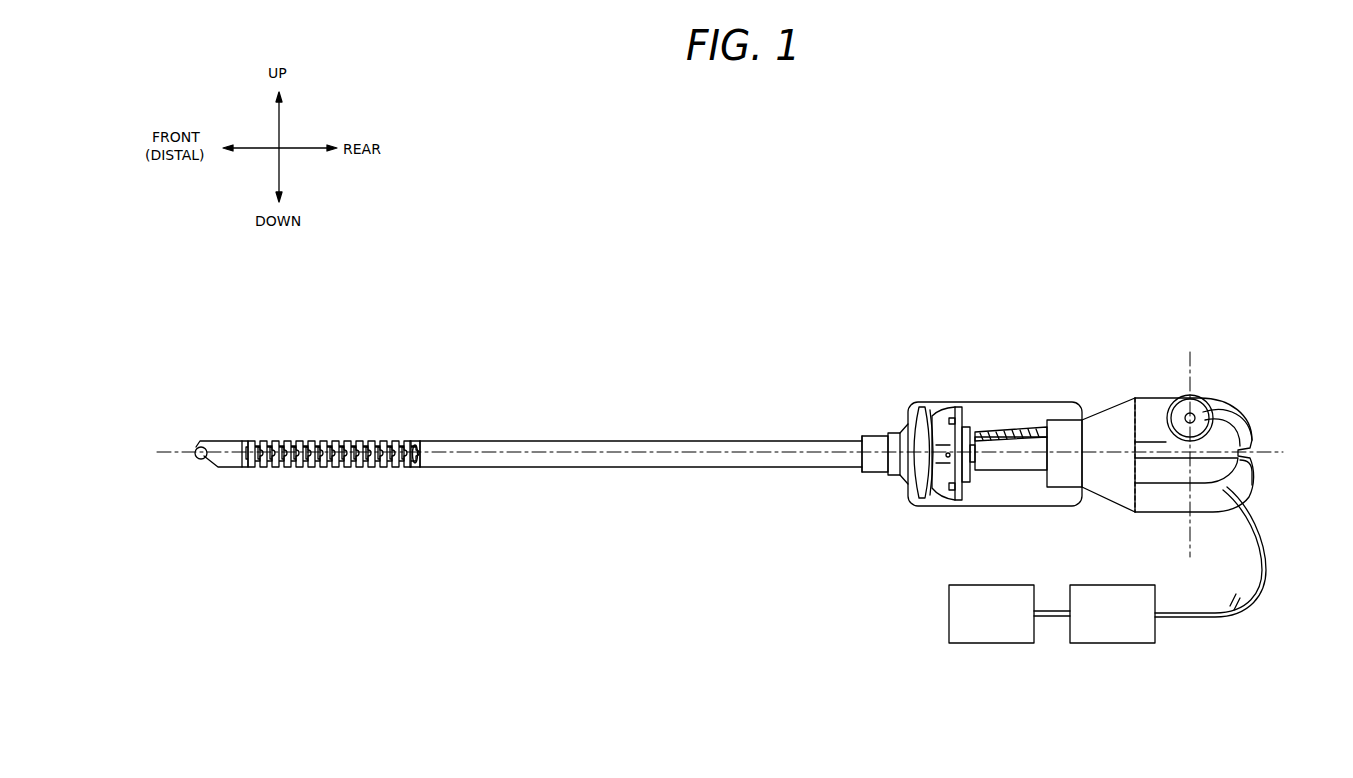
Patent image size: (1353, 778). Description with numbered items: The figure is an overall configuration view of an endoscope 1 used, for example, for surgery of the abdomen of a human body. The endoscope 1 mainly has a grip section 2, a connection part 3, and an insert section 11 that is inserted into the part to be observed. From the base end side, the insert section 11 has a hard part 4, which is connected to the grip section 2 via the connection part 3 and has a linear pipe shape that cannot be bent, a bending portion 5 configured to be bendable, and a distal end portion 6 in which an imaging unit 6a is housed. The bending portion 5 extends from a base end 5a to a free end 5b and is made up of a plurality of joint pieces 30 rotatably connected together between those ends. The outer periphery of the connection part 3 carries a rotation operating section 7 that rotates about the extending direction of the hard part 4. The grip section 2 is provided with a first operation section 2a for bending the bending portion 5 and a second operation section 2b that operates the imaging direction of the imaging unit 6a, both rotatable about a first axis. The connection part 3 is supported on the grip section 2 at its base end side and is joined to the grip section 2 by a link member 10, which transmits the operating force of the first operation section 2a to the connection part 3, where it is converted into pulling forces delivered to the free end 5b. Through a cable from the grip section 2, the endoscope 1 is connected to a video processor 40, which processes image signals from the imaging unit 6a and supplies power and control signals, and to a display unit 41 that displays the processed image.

The endoscope 1 is at (651, 485).
The grip section 2 is at (1201, 444).
The first operation section 2a is at (1233, 410).
The second operation section 2b is at (1248, 470).
The connection part 3 is at (938, 415).
The hard part 4 is at (664, 429).
The bending portion 5 is at (331, 445).
The base end 5a is at (415, 440).
The free end 5b is at (246, 441).
The distal end portion 6 is at (223, 475).
The imaging unit 6a is at (198, 461).
The rotation operating section 7 is at (995, 429).
The link member 10 is at (988, 437).
The insert section 11 is at (584, 441).
The joint pieces 30 is at (293, 438).
The video processor 40 is at (1127, 644).
The display unit 41 is at (1002, 644).